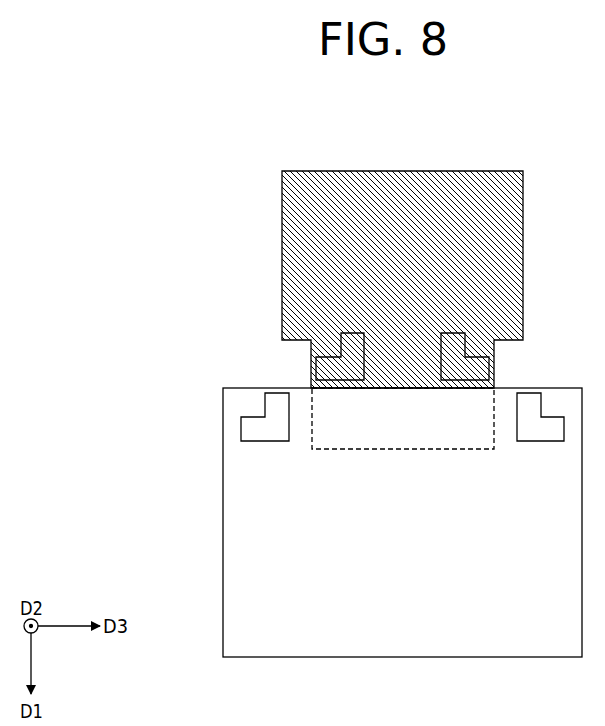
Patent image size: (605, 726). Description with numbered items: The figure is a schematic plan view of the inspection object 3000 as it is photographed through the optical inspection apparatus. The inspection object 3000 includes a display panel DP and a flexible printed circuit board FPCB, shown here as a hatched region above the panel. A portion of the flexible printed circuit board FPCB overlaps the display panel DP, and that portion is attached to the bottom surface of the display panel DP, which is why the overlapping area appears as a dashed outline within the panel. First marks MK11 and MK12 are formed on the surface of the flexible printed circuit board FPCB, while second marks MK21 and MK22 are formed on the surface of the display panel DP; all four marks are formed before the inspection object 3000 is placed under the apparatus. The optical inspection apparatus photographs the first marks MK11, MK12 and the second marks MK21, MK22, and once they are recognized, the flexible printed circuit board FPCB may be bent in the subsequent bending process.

The inspection object 3000 is at (130, 241).
The flexible printed circuit board FPCB is at (296, 256).
The display panel DP is at (238, 479).
The first mark MK11 is at (352, 342).
The first mark MK12 is at (450, 342).
The second mark MK21 is at (263, 430).
The second mark MK22 is at (538, 430).